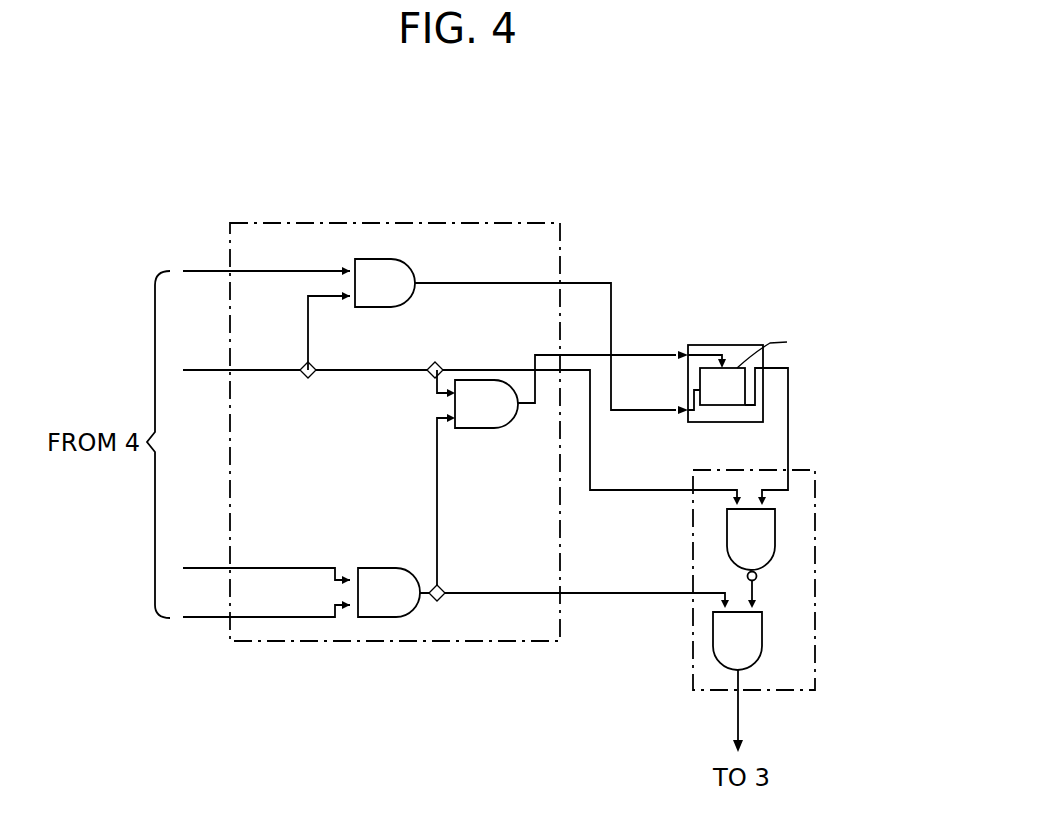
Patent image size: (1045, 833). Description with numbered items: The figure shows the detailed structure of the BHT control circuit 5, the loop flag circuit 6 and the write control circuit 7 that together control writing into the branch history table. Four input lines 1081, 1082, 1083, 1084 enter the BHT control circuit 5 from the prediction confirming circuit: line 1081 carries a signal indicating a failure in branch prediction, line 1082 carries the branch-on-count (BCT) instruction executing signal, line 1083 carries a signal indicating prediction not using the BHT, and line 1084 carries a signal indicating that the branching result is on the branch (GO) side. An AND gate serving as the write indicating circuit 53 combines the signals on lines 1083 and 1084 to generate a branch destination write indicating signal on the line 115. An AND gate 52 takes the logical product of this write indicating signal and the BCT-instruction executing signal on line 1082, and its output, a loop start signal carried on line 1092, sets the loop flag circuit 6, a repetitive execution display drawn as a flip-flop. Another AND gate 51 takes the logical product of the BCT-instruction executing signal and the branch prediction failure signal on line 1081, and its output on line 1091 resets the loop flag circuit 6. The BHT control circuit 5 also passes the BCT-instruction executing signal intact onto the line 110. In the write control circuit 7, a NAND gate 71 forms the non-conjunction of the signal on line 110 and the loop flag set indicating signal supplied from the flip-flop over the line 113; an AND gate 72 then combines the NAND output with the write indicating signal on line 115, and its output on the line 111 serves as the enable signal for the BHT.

The BHT control circuit 5 is at (530, 223).
The loop flag circuit 6 is at (735, 345).
The write control circuit 7 is at (815, 612).
The AND gate 51 is at (413, 268).
The AND gate 52 is at (492, 428).
The write indicating circuit 53 is at (385, 568).
The NAND gate 71 is at (775, 544).
The AND gate 72 is at (762, 644).
The line 110 is at (617, 490).
The line 111 is at (740, 715).
The line 113 is at (788, 432).
The line 115 is at (618, 593).
The line 1081 is at (236, 250).
The line 1082 is at (228, 352).
The line 1083 is at (192, 568).
The line 1084 is at (192, 617).
The line 1091 is at (613, 312).
The line 1092 is at (645, 355).